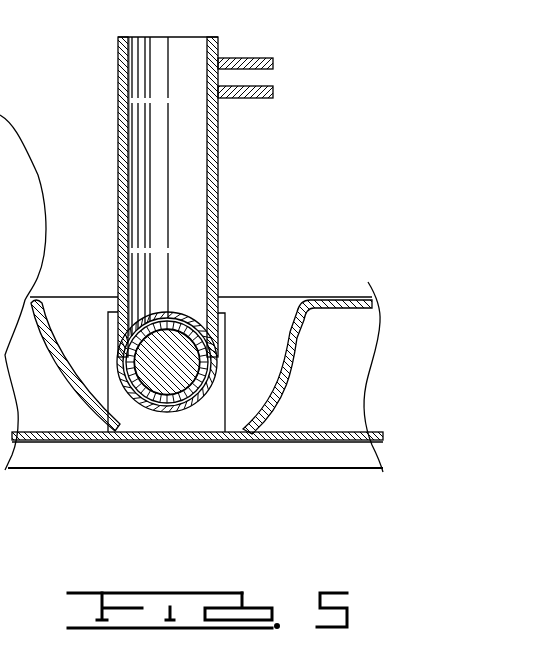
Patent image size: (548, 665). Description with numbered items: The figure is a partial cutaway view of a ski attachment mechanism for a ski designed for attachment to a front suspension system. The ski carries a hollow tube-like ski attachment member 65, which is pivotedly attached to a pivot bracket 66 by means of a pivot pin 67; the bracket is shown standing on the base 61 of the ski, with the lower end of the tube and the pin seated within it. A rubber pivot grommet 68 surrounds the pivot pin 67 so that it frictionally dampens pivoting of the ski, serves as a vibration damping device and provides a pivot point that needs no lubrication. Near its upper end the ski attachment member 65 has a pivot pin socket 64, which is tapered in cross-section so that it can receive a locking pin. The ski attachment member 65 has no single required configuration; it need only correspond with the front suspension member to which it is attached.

The base plate 61 is at (257, 470).
The pivot pin socket 64 is at (273, 73).
The ski attachment member 65 is at (218, 259).
The pivot bracket 66 is at (110, 341).
The pivot pin 67 is at (188, 353).
The rubber pivot grommet 68 is at (188, 397).